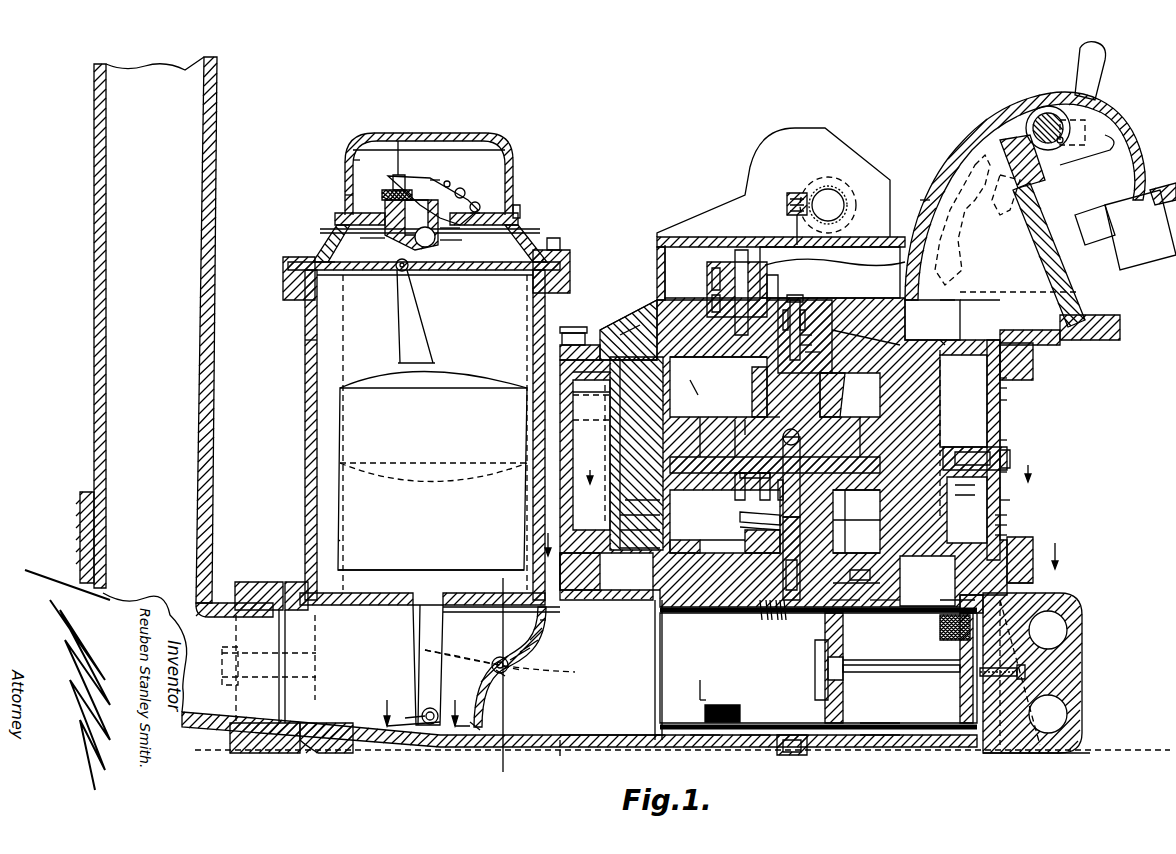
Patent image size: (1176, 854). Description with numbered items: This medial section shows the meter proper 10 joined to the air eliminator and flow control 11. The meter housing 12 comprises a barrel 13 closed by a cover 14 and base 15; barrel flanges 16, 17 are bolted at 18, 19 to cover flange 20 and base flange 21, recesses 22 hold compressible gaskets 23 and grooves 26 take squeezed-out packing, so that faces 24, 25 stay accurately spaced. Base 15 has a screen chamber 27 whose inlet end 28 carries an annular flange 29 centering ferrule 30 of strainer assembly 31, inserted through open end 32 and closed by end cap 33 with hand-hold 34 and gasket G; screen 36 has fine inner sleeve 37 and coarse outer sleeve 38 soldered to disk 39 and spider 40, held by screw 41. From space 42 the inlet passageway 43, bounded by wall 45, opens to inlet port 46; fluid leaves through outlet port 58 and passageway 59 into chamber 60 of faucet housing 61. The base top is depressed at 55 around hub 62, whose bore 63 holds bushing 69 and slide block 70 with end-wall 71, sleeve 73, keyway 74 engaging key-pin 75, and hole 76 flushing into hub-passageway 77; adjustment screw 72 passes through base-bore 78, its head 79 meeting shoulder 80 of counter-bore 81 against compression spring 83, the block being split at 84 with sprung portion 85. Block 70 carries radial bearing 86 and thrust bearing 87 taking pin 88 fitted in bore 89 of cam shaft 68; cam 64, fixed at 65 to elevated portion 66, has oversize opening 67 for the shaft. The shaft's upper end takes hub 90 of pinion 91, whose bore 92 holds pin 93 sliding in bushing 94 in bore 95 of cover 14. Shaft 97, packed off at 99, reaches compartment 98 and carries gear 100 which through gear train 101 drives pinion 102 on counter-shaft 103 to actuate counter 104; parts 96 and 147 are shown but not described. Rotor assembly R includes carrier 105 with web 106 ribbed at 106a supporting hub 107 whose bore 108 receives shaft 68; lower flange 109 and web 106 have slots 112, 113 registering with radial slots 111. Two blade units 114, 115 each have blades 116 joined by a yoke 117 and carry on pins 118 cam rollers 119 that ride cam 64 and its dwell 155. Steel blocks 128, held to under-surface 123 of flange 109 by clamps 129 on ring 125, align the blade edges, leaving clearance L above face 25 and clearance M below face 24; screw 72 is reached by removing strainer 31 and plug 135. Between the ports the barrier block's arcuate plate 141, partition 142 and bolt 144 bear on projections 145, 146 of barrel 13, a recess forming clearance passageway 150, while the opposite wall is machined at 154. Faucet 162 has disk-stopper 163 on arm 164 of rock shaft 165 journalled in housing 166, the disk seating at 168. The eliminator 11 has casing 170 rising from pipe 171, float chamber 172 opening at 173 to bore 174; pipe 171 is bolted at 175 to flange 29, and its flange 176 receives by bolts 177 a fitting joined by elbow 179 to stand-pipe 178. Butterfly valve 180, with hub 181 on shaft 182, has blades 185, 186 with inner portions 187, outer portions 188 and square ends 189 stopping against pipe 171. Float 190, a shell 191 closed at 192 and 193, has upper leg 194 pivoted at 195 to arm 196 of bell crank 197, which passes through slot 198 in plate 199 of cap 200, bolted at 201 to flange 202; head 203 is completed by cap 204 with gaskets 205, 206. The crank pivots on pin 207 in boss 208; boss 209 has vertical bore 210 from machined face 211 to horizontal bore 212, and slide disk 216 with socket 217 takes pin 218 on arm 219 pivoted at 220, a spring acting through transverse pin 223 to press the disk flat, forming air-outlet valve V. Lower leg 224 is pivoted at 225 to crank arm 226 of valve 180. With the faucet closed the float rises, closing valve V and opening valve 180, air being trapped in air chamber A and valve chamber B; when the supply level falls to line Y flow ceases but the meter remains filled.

The meter proper 10 is at (722, 200).
The air eliminator and flow control 11 is at (437, 138).
The meter housing 12 is at (1008, 432).
The annular body member or barrel 13 is at (503, 765).
The cover 14 is at (424, 703).
The base 15 is at (882, 750).
The barrel flange 16 is at (1050, 380).
The barrel flange 17 is at (1045, 515).
The bolts 18 is at (578, 320).
The bolts 19 is at (1040, 505).
The cover flange 20 is at (1040, 360).
The base flange 21 is at (1045, 525).
The recess 22 is at (578, 375).
The compressible gaskets 23 is at (578, 392).
The face of cover 24 is at (648, 330).
The face of base 25 is at (930, 525).
The grooves 26 is at (610, 350).
The screen chamber 27 is at (705, 742).
The inlet end 28 is at (662, 748).
The internal annular flange 29 is at (670, 605).
The ferrule 30 is at (680, 615).
The strainer or screen assembly 31 is at (755, 742).
The open end 32 is at (965, 615).
The end cap 33 is at (1010, 745).
The hand-hold 34 is at (1082, 640).
The cylindrical screen 36 is at (768, 726).
The inner sleeve 37 is at (740, 722).
The outer sleeve 38 is at (885, 722).
The disk 39 is at (980, 706).
The spider 40 is at (843, 690).
The screw 41 is at (903, 668).
The space 42 is at (870, 620).
The inlet passageway 43 is at (1035, 598).
The defining wall 45 is at (1035, 587).
The inlet port 46 is at (1035, 572).
The depression 55 is at (850, 612).
The outlet port 58 is at (966, 352).
The outlet passageway 59 is at (975, 350).
The chamber 60 is at (940, 192).
The valve or faucet housing 61 is at (950, 160).
The hub or post 62 is at (745, 540).
The vertical bore 63 is at (822, 605).
The uniformly accelerated motion cam 64 is at (752, 471).
The cam fixing 65 is at (744, 465).
The elevated portion 66 is at (772, 471).
The over-size opening 67 is at (781, 473).
The cam shaft 68 is at (847, 395).
The bushing 69 is at (856, 510).
The slide block 70 is at (712, 666).
The end-wall 71 is at (711, 672).
The adjustment screw 72 is at (778, 631).
The sleeve portion 73 is at (856, 497).
The keyway 74 is at (856, 537).
The key-pin 75 is at (851, 521).
The hole 76 is at (794, 553).
The hub-passageway 77 is at (740, 525).
The base-bore 78 is at (777, 638).
The screw head 79 is at (754, 617).
The shoulder 80 is at (761, 623).
The counter-bore 81 is at (757, 631).
The compression spring 83 is at (762, 638).
The split 84 is at (860, 566).
The free portion 85 is at (856, 571).
The radial bearing 86 is at (750, 512).
The thrust bearing 87 is at (740, 500).
The pin 88 is at (745, 490).
The bore 89 is at (778, 430).
The pinion hub 90 is at (820, 352).
The pinion 91 is at (802, 333).
The pinion bore 92 is at (827, 337).
The pin 93 is at (805, 300).
The bushing 94 is at (820, 310).
The bore 95 is at (825, 315).
The plunger 96 is at (775, 330).
The shaft 97 is at (715, 298).
The compartment 98 is at (692, 250).
The packing assembly 99 is at (712, 280).
The gear 100 is at (742, 262).
The gear train 101 is at (770, 255).
The pinion 102 is at (815, 265).
The counter-shaft 103 is at (790, 235).
The counter or register mechanism 104 is at (835, 176).
The annular body member or carrier 105 is at (602, 418).
The web 106 is at (716, 417).
The ribs 106a is at (710, 379).
The hub 107 is at (760, 408).
The bore 108 is at (765, 400).
The in-turned annular flange 109 is at (660, 520).
The radial slots 111 is at (612, 432).
The slots 112 is at (655, 548).
The slots 113 is at (700, 368).
The blade unit 114 is at (860, 430).
The blade unit 115 is at (848, 403).
The blades 116 is at (622, 442).
The yoke 117 is at (718, 420).
The pins 118 is at (1036, 462).
The cam rollers 119 is at (610, 470).
The under-surface 123 is at (655, 535).
The ring 125 is at (722, 544).
The steel blocks 128 is at (950, 545).
The clamps 129 is at (882, 614).
The housing plug 135 is at (800, 750).
The arcuate plate portion 141 is at (1040, 405).
The partition 142 is at (1040, 440).
The bolt 144 is at (1040, 457).
The projection 145 is at (934, 668).
The projection 146 is at (1030, 388).
The plug 147 is at (935, 620).
The clearance passageway 150 is at (1020, 495).
The machined wall portion 154 is at (606, 492).
The dwell 155 is at (749, 425).
The valve or faucet 162 is at (968, 172).
The disk-stopper 163 is at (1065, 210).
The arm 164 is at (1100, 145).
The rock shaft 165 is at (1062, 118).
The housing 166 is at (1082, 135).
The seat 168 is at (1085, 330).
The cylindrical barrel or casing 170 is at (305, 404).
The casing or pipe 171 is at (555, 748).
The float-chamber 172 is at (308, 362).
The opening 173 is at (310, 560).
The horizontal bore 174 is at (350, 732).
The bolts 175 is at (580, 760).
The attachment flange 176 is at (297, 748).
The bolts 177 is at (222, 700).
The inlet or stand-pipe 178 is at (216, 331).
The elbow 179 is at (232, 552).
The flow-control valve 180 is at (520, 650).
The hub 181 is at (512, 665).
The shaft 182 is at (505, 675).
The blade 185 is at (490, 722).
The blade 186 is at (532, 630).
The inner portion 187 is at (495, 655).
The outer portion 188 is at (535, 620).
The square-cut ends 189 is at (522, 572).
The float 190 is at (338, 496).
The metal shell 191 is at (355, 510).
The top 192 is at (380, 380).
The bottom 193 is at (392, 598).
The vertical leg 194 is at (422, 335).
The pivotal connection 195 is at (408, 270).
The arm 196 is at (405, 240).
The bell crank 197 is at (458, 231).
The slot 198 is at (345, 220).
The plate 199 is at (345, 232).
The cap 200 is at (312, 250).
The bolts 201 is at (560, 244).
The flange 202 is at (295, 285).
The head 203 is at (335, 207).
The cap 204 is at (345, 150).
The gasket 205 is at (300, 268).
The gasket 206 is at (516, 212).
The pin 207 is at (482, 202).
The boss 208 is at (485, 210).
The elongated boss 209 is at (362, 244).
The vertical bore 210 is at (462, 241).
The machined face 211 is at (432, 190).
The horizontal bore 212 is at (428, 247).
The slide valve 216 is at (348, 195).
The socket 217 is at (378, 180).
The pin 218 is at (398, 140).
The arm 219 is at (437, 178).
The pivot pin 220 is at (466, 190).
The transverse pin 223 is at (450, 183).
The leg 224 is at (414, 640).
The pivotal connection 225 is at (425, 710).
The crank arm 226 is at (430, 728).
The air chamber A is at (335, 257).
The valve chamber B is at (370, 158).
The gasket G is at (1045, 690).
The clearance L is at (593, 485).
The clearance M is at (945, 330).
The rotor assembly R is at (642, 300).
The air-outlet valve V is at (383, 205).
The fluid level line Y is at (995, 300).